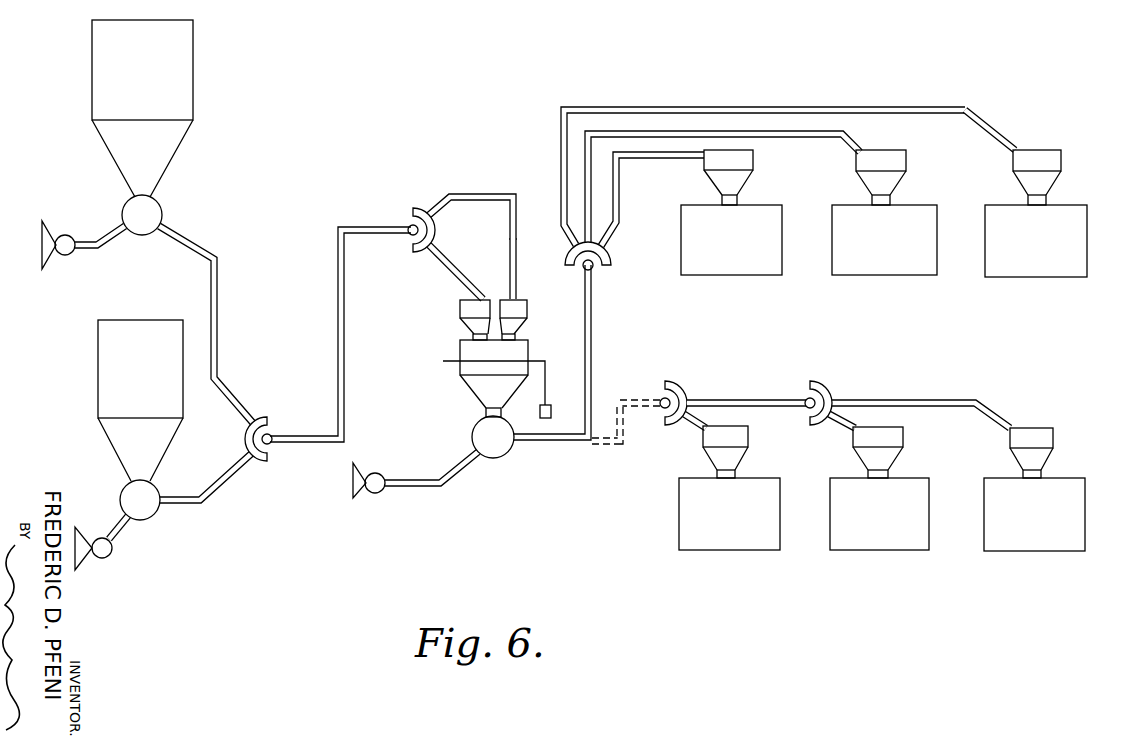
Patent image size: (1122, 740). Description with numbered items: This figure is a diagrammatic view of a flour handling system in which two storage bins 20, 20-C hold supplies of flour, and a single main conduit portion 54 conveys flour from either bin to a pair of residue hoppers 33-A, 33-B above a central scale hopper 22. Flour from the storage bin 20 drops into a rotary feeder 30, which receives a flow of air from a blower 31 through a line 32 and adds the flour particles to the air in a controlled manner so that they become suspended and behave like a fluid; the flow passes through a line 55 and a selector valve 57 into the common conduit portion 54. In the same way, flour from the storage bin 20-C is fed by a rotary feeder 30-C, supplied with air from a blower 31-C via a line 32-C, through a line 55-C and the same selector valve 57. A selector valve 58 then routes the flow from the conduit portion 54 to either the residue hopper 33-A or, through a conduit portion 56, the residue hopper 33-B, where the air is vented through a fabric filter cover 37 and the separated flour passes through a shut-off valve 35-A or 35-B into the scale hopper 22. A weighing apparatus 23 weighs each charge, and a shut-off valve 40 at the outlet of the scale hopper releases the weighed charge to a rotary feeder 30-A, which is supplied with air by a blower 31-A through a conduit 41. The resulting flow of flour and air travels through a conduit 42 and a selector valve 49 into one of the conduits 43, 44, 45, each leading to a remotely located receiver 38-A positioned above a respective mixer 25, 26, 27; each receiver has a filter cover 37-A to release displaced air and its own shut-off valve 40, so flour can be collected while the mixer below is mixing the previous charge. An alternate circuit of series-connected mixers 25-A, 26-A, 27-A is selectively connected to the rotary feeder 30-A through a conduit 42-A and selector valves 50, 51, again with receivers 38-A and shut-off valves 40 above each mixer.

The storage bin 20 is at (183, 90).
The storage bin 20-C is at (108, 350).
The scale hopper 22 is at (455, 386).
The weighing apparatus 23 is at (546, 370).
The mixer 25 is at (716, 266).
The mixer 26 is at (868, 268).
The mixer 27 is at (1022, 270).
The mixer 25-A is at (708, 540).
The mixer 26-A is at (857, 540).
The mixer 27-A is at (1015, 540).
The rotary feeder 30 is at (150, 212).
The rotary feeder 30-C is at (123, 490).
The rotary feeder 30-A is at (498, 445).
The blower 31 is at (65, 255).
The blower 31-C is at (107, 557).
The blower 31-A is at (370, 494).
The line 32 is at (100, 230).
The line 32-C is at (125, 526).
The residue hopper 33-A is at (460, 308).
The residue hopper 33-B is at (520, 312).
The shut-off valve 35-A is at (473, 336).
The shut-off valve 35-B is at (516, 337).
The filter cover 37 is at (484, 297).
The filter cover 37-A is at (1025, 150).
The receiver 38-A is at (745, 183).
The shut-off valve 40 is at (485, 412).
The conduit 41 is at (420, 487).
The conduit 42 is at (552, 441).
The conduit 42-A is at (622, 440).
The conduit 43 is at (723, 108).
The conduit 44 is at (790, 137).
The conduit 45 is at (640, 158).
The selector valve 49 is at (606, 262).
The selector valve 50 is at (714, 365).
The selector valve 51 is at (852, 370).
The main conduit portion 54 is at (338, 325).
The conduit portion 55 is at (216, 298).
The line 55-C is at (194, 498).
The conduit portion 56 is at (458, 195).
The selector valve 57 is at (307, 403).
The selector valve 58 is at (410, 220).